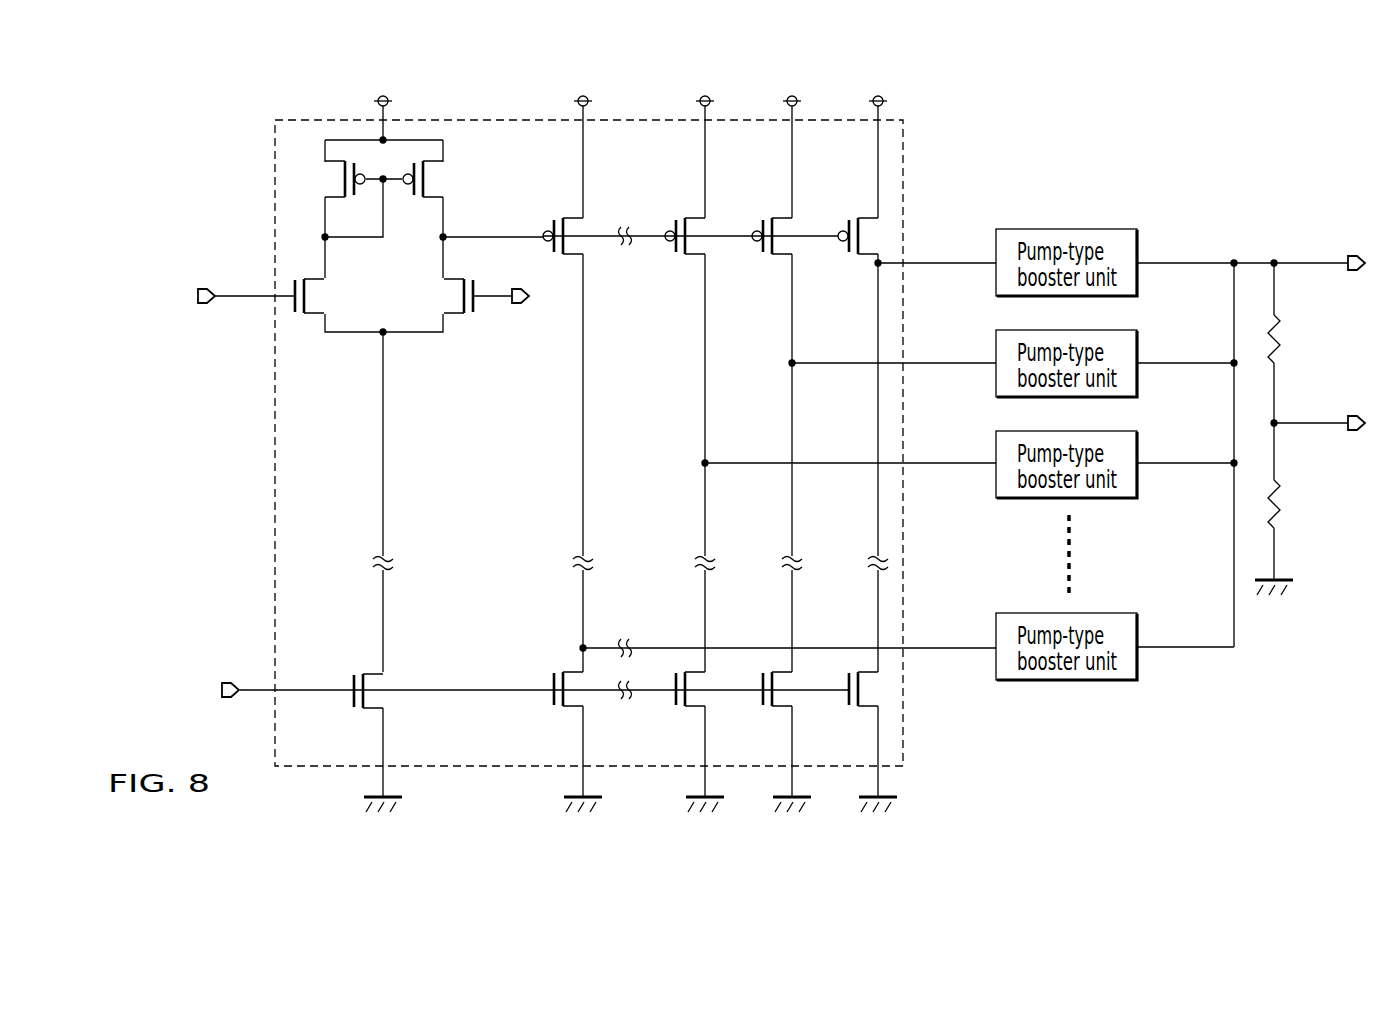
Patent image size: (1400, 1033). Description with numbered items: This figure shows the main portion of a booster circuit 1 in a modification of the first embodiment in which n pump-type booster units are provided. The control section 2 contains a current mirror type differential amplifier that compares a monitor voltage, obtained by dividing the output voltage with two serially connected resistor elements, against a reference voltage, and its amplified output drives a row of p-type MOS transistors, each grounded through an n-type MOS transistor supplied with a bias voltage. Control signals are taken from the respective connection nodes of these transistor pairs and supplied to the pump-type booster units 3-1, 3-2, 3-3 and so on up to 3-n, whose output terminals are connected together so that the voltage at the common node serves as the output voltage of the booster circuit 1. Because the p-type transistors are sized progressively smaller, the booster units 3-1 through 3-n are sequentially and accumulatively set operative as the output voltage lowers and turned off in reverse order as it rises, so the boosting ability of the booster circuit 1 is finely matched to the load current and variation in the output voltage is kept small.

The booster circuit 1 is at (838, 71).
The control section 2 is at (481, 120).
The pump-type booster unit 3-1 is at (1140, 246).
The pump-type booster unit 3-2 is at (1140, 346).
The pump-type booster unit 3-3 is at (1140, 447).
The pump-type booster unit 3-n is at (1140, 630).